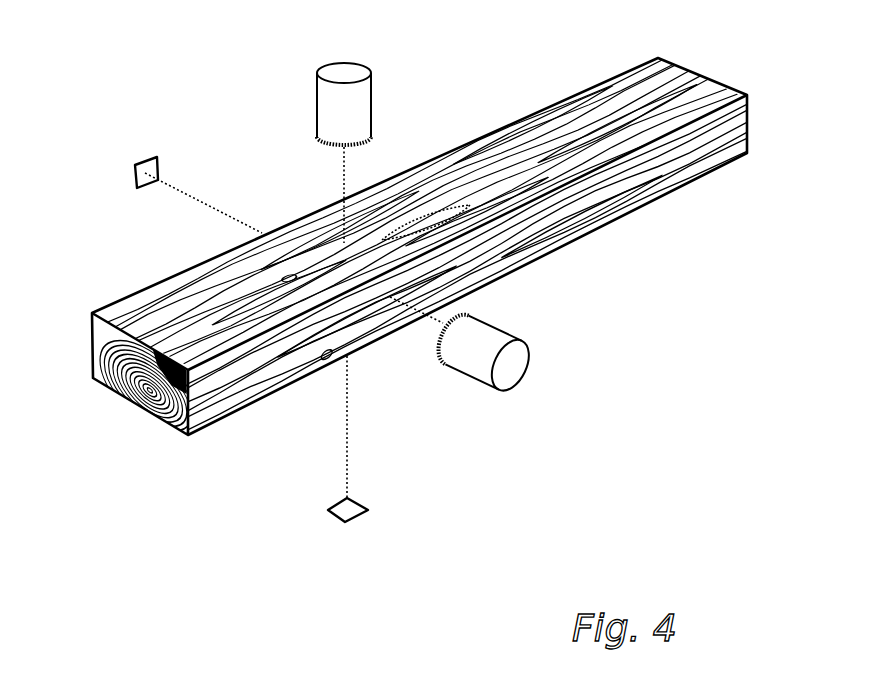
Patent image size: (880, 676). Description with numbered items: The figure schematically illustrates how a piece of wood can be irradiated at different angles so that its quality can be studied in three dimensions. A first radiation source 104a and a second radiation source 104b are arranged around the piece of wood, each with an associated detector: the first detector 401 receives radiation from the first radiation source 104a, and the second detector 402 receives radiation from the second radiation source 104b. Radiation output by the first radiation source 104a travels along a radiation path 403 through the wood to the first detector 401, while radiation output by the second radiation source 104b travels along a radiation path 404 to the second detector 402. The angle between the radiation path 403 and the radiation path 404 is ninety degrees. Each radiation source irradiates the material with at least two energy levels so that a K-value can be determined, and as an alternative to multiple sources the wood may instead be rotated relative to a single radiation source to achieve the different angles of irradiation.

The first radiation source 104a is at (360, 98).
The second radiation source 104b is at (520, 368).
The first detector 401 is at (362, 512).
The second detector 402 is at (158, 180).
The radiation path of the first radiation source 403 is at (344, 177).
The radiation path of the second radiation source 404 is at (432, 327).